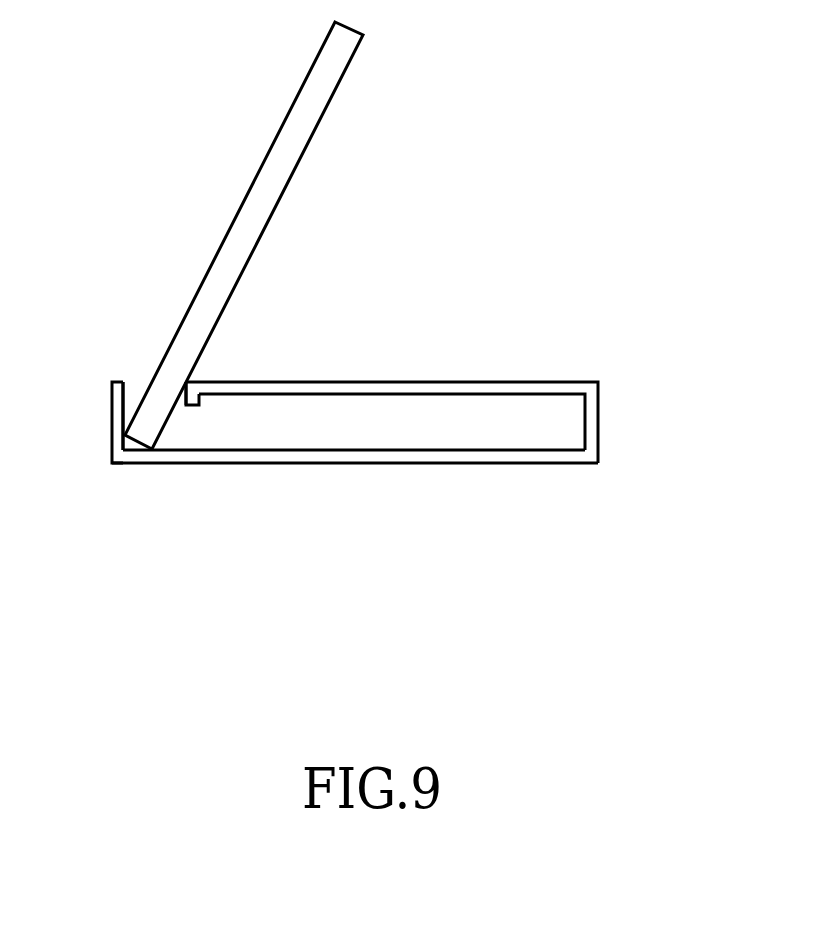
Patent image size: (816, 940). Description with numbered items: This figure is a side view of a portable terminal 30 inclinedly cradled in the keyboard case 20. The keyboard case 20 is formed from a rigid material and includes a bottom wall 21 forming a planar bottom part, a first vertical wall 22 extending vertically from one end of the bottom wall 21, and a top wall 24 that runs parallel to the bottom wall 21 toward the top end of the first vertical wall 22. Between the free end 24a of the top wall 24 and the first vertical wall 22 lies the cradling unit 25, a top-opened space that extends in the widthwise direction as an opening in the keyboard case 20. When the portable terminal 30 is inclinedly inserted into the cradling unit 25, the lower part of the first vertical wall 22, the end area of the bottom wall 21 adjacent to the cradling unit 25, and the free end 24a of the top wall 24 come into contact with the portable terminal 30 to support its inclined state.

The keyboard case 20 is at (371, 428).
The bottom wall 21 is at (412, 457).
The first vertical wall 22 is at (118, 415).
The top wall 24 is at (463, 387).
The free end of the top wall 24a is at (189, 407).
The cradling unit 25 is at (135, 392).
The portable terminal 30 is at (265, 188).